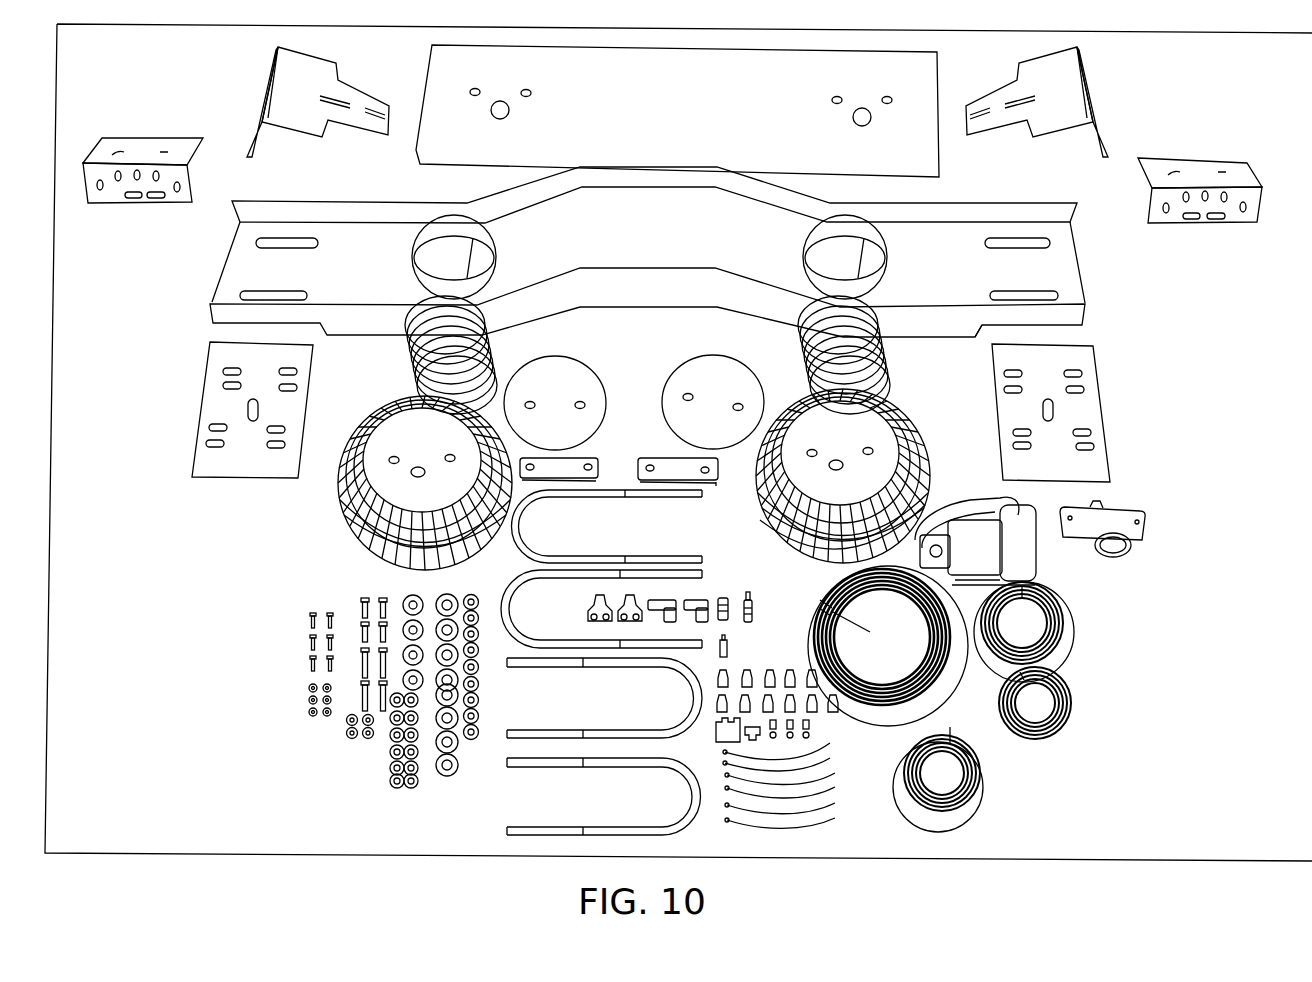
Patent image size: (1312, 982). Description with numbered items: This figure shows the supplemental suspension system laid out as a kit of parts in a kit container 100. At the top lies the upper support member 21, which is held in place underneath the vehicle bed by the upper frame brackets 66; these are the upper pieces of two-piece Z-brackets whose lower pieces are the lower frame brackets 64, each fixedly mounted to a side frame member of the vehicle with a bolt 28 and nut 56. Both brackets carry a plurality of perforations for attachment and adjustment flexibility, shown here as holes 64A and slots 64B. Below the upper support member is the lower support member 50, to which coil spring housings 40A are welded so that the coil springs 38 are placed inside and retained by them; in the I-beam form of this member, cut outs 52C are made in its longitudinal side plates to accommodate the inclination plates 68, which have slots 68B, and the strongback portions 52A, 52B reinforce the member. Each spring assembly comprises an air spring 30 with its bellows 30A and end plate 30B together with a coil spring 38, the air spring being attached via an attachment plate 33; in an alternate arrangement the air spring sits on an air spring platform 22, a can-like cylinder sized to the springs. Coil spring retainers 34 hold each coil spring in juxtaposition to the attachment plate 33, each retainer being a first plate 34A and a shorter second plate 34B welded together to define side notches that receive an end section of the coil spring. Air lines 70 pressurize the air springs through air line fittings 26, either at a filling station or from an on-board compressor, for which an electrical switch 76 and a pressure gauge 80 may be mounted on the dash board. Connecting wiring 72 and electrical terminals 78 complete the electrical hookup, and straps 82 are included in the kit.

The upper support member 21 is at (657, 112).
The air spring platform 22 is at (392, 787).
The air line fittings 26 is at (692, 599).
The bolts 28 is at (365, 598).
The air spring 30 is at (869, 476).
The air spring bellows 30A is at (915, 470).
The air spring end plate 30B is at (868, 423).
The single attachment plate 33 is at (692, 375).
The coil spring retainer assembly 34 is at (598, 465).
The first plate 34A is at (670, 466).
The second plate 34B is at (708, 484).
The coil spring 38 is at (884, 354).
The coil spring housing 40A is at (482, 279).
The lower support member 50 is at (674, 261).
The lower member 52A is at (1070, 325).
The upper member 52B is at (1055, 212).
The cut outs 52C is at (1063, 331).
The nuts 56 is at (462, 740).
The lower frame bracket 64 is at (180, 152).
The holes 64A is at (178, 187).
The slots 64B is at (118, 153).
The upper frame bracket 66 is at (307, 104).
The inclination plate 68 is at (300, 382).
The slots 68B is at (1093, 449).
The air lines 70 is at (882, 690).
The connecting wiring 72 is at (1068, 700).
The electrical switch 76 is at (1032, 556).
The electrical terminals 78 is at (762, 672).
The pressure gauge 80 is at (1133, 538).
The straps 82 is at (827, 810).
The kit container 100 is at (143, 855).